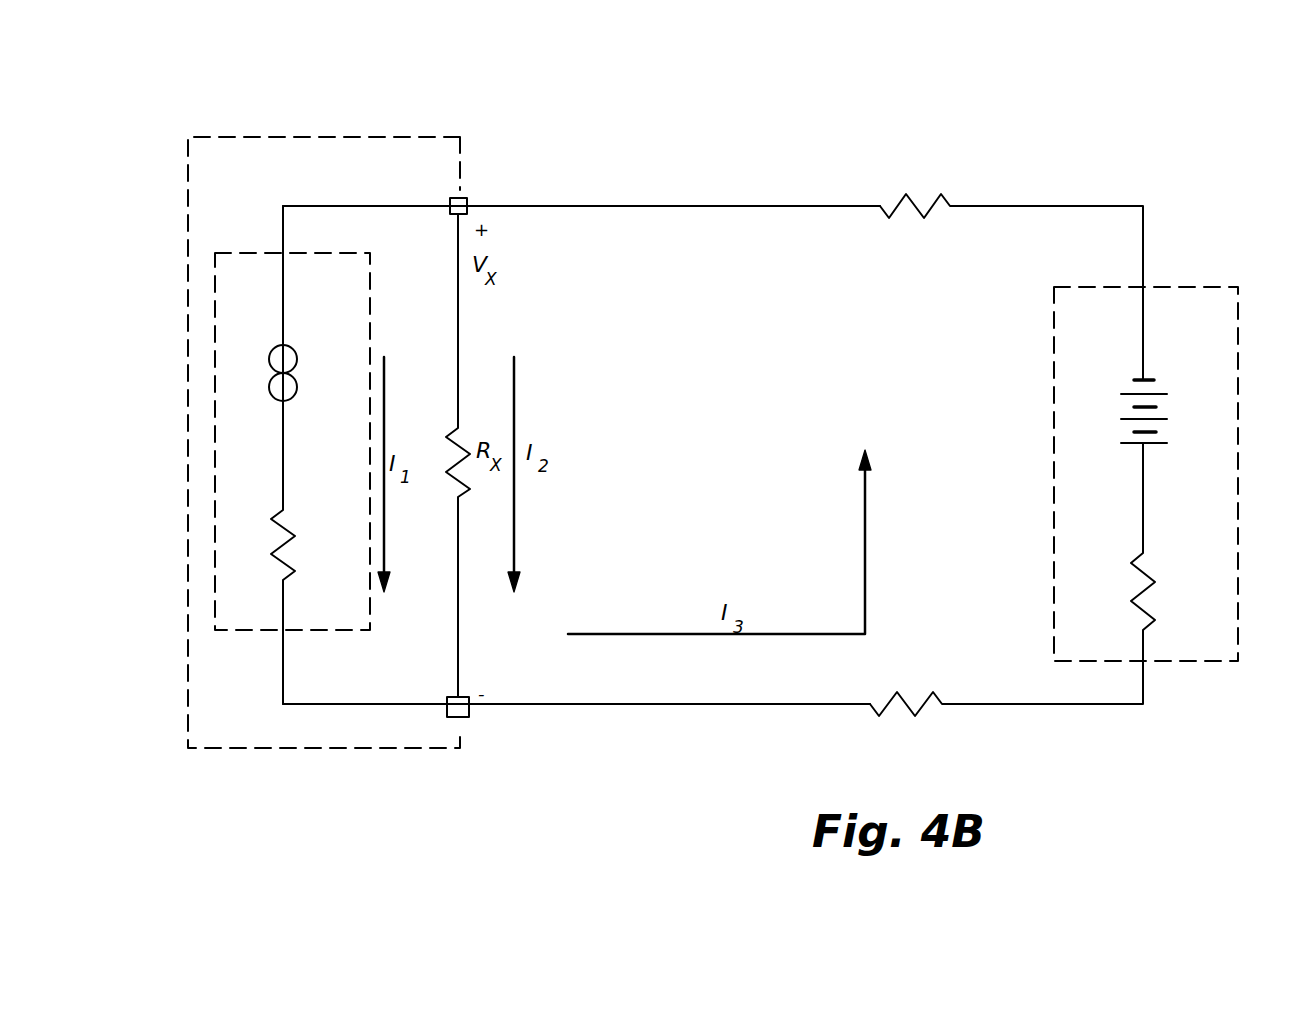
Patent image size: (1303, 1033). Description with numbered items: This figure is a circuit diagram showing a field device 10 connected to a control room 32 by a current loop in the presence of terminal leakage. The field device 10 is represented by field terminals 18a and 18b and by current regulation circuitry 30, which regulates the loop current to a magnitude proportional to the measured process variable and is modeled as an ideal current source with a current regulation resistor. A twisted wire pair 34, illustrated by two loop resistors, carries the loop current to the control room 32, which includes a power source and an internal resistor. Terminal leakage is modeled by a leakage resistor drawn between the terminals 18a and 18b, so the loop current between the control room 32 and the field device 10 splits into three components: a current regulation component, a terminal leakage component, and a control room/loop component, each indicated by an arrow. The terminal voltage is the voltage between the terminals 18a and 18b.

The field device 10 is at (237, 133).
The current regulation circuitry 30 is at (250, 250).
The field terminal 18a is at (462, 197).
The field terminal 18b is at (463, 717).
The twisted wire pair 34 is at (862, 170).
The control room 32 is at (1189, 285).